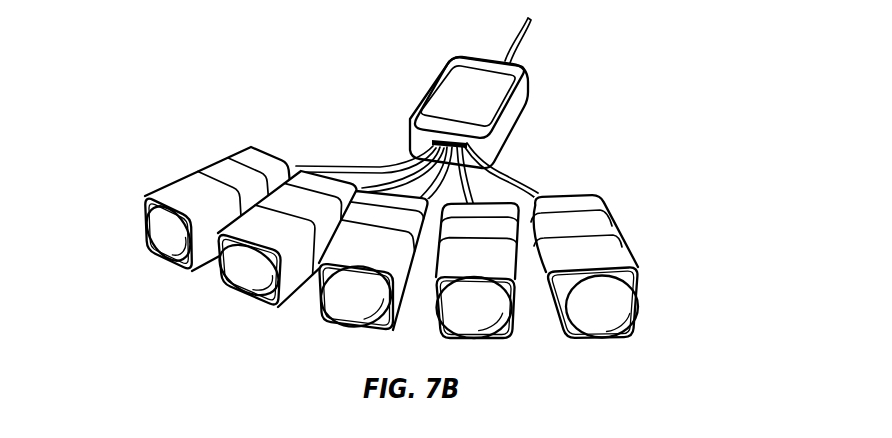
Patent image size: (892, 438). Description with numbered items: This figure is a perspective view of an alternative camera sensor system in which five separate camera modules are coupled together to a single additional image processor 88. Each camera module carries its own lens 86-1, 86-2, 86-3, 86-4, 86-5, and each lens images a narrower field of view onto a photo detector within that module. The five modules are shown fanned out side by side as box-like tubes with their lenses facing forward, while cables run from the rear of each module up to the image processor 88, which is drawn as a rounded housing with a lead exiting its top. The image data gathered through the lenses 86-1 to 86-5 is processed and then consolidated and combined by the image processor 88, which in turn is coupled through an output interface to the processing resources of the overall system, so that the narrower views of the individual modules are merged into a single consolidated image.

The image processor 88 is at (518, 108).
The lens 86-1 is at (143, 200).
The lens 86-2 is at (233, 294).
The lens 86-3 is at (366, 323).
The lens 86-4 is at (499, 331).
The lens 86-5 is at (624, 288).